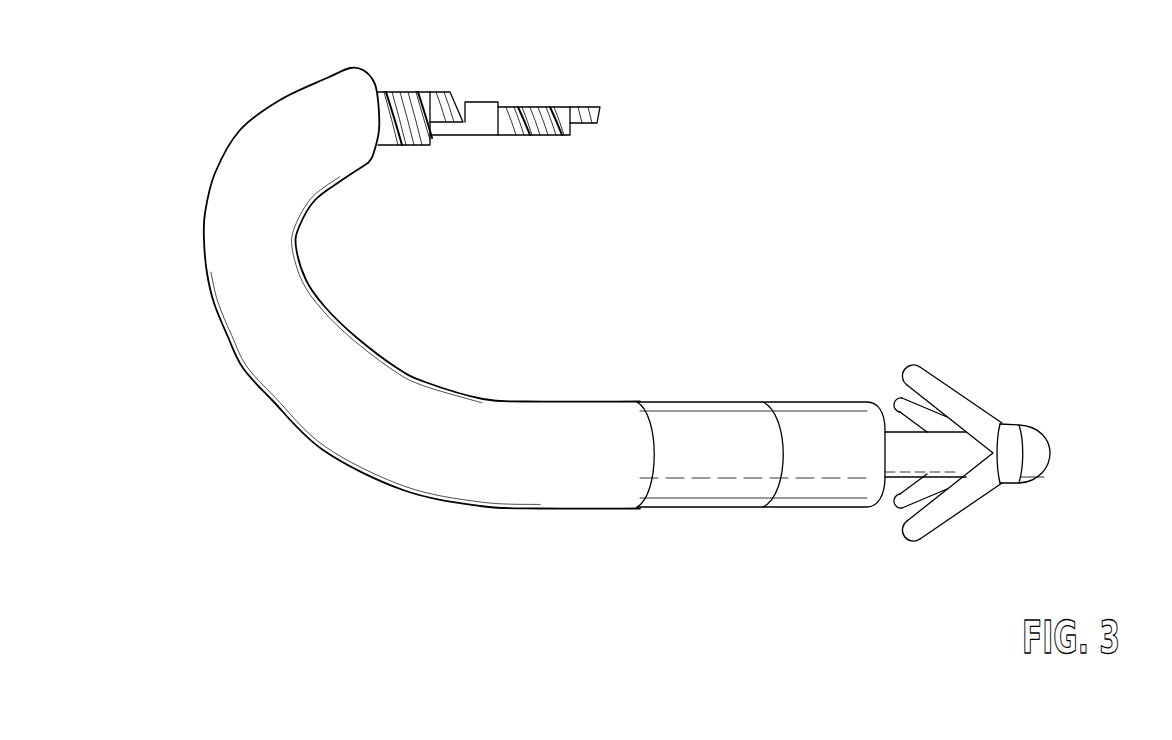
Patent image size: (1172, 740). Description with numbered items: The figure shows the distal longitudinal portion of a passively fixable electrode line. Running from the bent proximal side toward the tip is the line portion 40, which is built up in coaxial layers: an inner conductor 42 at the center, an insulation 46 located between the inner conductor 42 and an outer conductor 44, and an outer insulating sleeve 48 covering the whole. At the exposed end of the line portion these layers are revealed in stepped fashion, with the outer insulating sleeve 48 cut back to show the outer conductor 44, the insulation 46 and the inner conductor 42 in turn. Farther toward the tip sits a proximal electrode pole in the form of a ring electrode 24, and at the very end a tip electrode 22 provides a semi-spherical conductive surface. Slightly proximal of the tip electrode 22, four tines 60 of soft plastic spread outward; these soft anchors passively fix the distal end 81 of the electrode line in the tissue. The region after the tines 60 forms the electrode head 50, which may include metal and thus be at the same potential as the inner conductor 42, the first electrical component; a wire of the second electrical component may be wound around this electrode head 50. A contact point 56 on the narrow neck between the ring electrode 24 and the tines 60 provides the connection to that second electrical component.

The tip electrode 22 is at (1035, 440).
The ring electrode 24 is at (695, 425).
The line portion 40 is at (408, 319).
The inner conductor 42 is at (563, 123).
The outer conductor 44 is at (420, 135).
The insulation 46 is at (485, 123).
The outer insulating sleeve 48 is at (287, 115).
The electrode head 50 is at (1048, 545).
The contact point 56 is at (907, 439).
The tines 60 is at (932, 385).
The distal end 81 is at (866, 545).